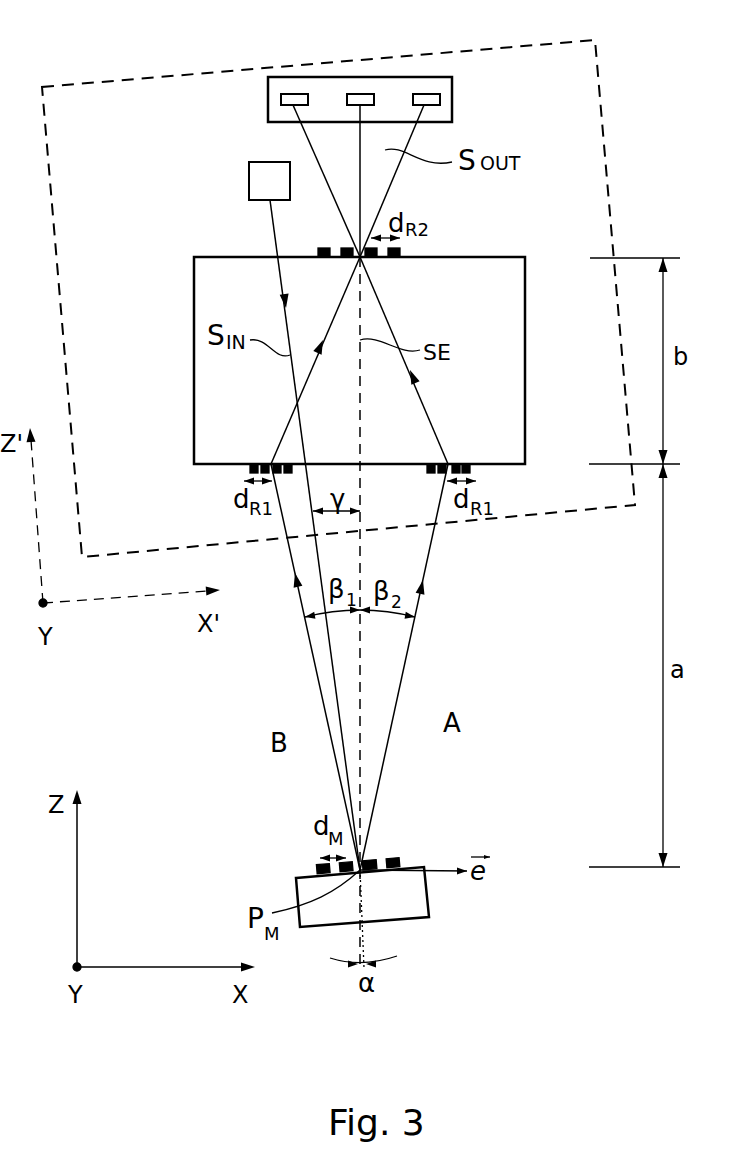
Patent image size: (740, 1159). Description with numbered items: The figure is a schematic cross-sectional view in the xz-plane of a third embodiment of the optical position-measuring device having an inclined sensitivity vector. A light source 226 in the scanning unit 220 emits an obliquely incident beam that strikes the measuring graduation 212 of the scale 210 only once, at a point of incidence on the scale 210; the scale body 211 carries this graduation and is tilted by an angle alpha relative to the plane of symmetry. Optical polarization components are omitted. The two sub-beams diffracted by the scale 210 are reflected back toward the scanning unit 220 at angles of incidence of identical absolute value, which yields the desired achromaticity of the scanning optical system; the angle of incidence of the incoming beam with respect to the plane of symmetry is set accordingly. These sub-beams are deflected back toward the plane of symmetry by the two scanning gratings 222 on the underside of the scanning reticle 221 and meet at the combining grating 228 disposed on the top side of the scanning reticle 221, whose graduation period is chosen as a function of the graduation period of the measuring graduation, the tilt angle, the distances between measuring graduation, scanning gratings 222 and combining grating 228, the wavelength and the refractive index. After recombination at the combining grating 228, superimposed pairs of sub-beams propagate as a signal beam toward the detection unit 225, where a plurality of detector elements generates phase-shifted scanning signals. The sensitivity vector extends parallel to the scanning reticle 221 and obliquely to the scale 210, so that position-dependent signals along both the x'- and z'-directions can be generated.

The scale 210 is at (379, 873).
The carrier body of measuring standard 211 is at (302, 893).
The measuring graduation 212 is at (390, 854).
The scanning unit 220 is at (600, 82).
The scanning reticle 221 is at (518, 345).
The scanning gratings 222 is at (550, 435).
The detection unit 225 is at (362, 77).
The light source 226 is at (249, 181).
The combining grating 228 is at (395, 262).